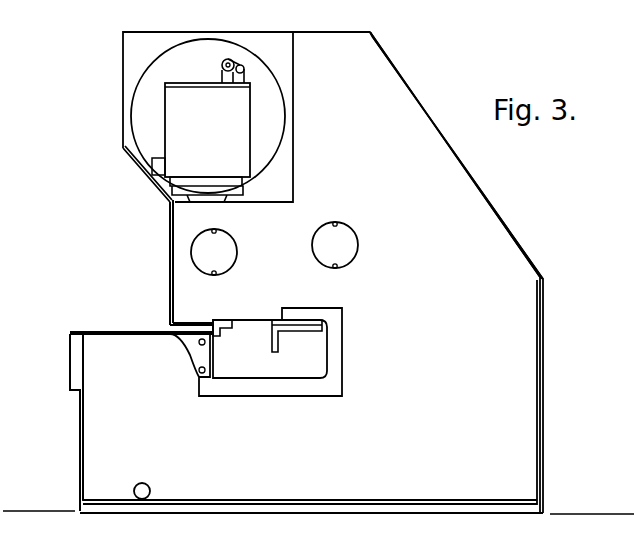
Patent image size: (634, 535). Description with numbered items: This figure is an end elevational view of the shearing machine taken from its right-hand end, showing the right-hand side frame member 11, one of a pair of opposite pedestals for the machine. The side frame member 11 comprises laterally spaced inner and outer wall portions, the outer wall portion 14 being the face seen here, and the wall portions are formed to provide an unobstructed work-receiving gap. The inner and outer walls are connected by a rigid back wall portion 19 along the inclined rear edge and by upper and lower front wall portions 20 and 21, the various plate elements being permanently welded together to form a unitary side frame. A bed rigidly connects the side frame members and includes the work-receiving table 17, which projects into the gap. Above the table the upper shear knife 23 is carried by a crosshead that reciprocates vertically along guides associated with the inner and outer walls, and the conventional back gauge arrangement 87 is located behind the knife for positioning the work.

The side frame member 11 is at (520, 461).
The outer wall portion 14 is at (446, 384).
The work-receiving table 17 is at (121, 331).
The back wall portion 19 is at (543, 280).
The upper front wall portion 20 is at (168, 226).
The lower front wall portion 21 is at (80, 424).
The upper shear knife 23 is at (224, 321).
The back gauge arrangement 87 is at (279, 335).